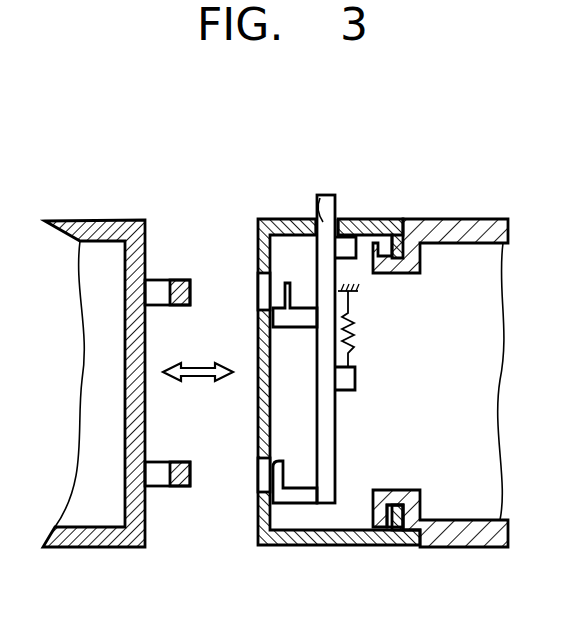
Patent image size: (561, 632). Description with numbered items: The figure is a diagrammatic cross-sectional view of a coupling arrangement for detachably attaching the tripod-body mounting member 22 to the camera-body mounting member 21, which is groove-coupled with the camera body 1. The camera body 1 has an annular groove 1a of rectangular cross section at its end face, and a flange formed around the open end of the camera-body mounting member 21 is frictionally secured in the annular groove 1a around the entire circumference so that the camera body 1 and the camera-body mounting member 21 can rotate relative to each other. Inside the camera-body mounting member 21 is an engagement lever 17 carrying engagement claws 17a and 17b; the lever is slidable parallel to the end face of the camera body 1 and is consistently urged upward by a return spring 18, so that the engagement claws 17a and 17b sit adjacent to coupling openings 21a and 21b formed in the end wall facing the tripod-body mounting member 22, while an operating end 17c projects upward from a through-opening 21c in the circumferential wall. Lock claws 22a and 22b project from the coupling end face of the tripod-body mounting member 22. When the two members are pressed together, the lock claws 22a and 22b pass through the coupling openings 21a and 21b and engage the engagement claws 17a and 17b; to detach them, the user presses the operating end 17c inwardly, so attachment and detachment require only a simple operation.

The camera body 1 is at (448, 218).
The annular groove 1a is at (395, 533).
The engagement lever 17 is at (338, 191).
The engagement claw 17a is at (283, 287).
The engagement claw 17b is at (290, 479).
The operating end 17c is at (336, 212).
The return spring 18 is at (356, 331).
The camera-body mounting member 21 is at (356, 543).
The coupling opening 21a is at (256, 292).
The coupling opening 21b is at (258, 478).
The through-opening 21c is at (317, 215).
The tripod-body mounting member 22 is at (90, 226).
The lock claw 22a is at (180, 281).
The lock claw 22b is at (180, 487).